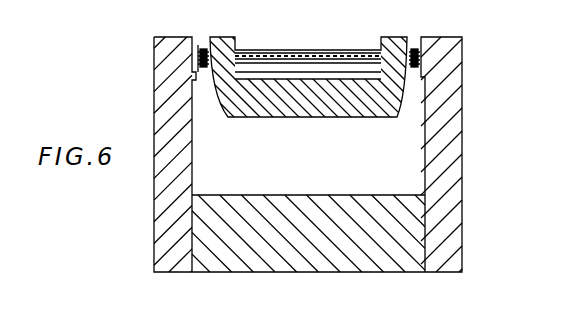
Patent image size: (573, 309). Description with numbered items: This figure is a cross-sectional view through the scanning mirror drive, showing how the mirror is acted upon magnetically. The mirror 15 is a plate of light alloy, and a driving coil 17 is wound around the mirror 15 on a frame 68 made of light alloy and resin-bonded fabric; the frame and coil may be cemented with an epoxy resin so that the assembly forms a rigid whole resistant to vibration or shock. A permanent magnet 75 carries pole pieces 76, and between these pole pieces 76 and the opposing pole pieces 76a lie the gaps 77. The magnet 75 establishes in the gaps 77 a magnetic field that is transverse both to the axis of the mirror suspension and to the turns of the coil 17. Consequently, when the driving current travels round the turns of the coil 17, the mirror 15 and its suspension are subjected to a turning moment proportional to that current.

The mirror 15 is at (333, 52).
The driving coil 17 is at (201, 48).
The frame 68 is at (204, 48).
The permanent magnet 75 is at (372, 262).
The pole pieces 76 is at (166, 118).
The pole pieces 76a is at (213, 37).
The gaps 77 is at (418, 68).